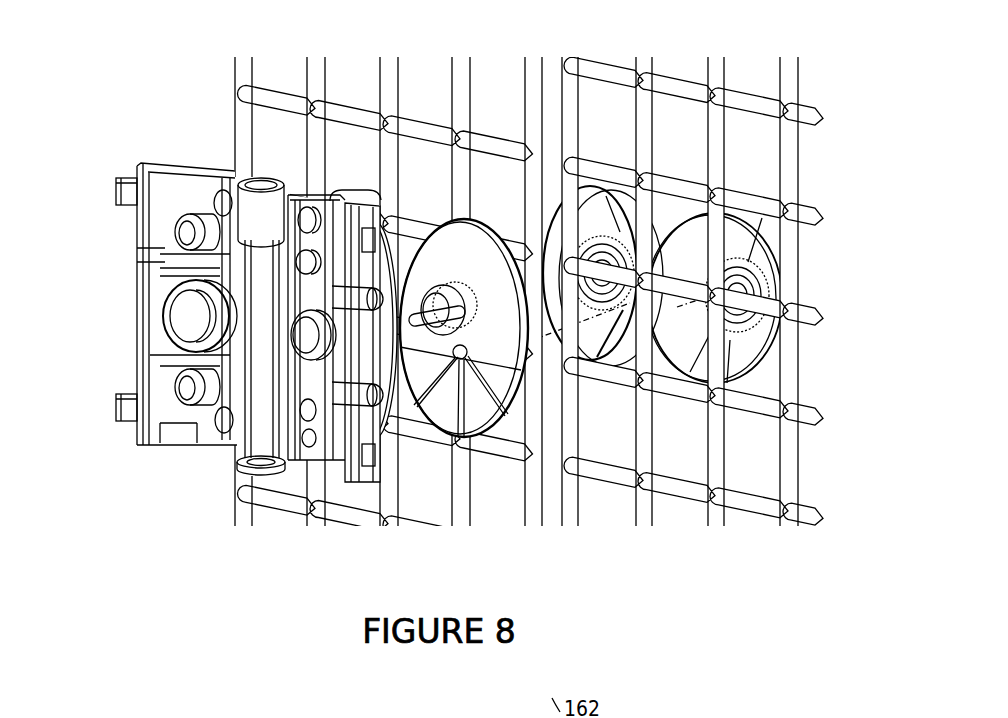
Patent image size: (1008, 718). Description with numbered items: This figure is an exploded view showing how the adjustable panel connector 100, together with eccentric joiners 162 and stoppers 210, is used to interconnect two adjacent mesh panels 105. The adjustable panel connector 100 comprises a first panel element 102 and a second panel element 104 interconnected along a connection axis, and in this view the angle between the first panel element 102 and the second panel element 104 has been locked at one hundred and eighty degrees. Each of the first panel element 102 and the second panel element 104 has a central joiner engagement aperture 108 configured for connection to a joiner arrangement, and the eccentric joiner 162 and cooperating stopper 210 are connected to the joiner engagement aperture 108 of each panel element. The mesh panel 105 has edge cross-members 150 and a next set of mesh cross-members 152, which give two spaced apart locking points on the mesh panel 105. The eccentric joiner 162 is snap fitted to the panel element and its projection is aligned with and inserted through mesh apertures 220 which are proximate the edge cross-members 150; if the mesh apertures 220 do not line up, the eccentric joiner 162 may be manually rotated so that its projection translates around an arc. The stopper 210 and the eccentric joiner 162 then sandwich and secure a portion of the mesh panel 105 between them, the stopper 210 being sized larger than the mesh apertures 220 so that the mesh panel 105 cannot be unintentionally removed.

The adjustable panel connector 100 is at (224, 375).
The first panel element 102 is at (203, 440).
The second panel element 104 is at (368, 470).
The mesh panel 105 is at (508, 322).
The joiner engagement aperture 108 is at (192, 318).
The edge cross-members 150 is at (538, 514).
The mesh cross-members 152 is at (643, 513).
The eccentric joiner 162 is at (343, 197).
The stopper 210 is at (618, 200).
The mesh apertures 220 is at (704, 200).